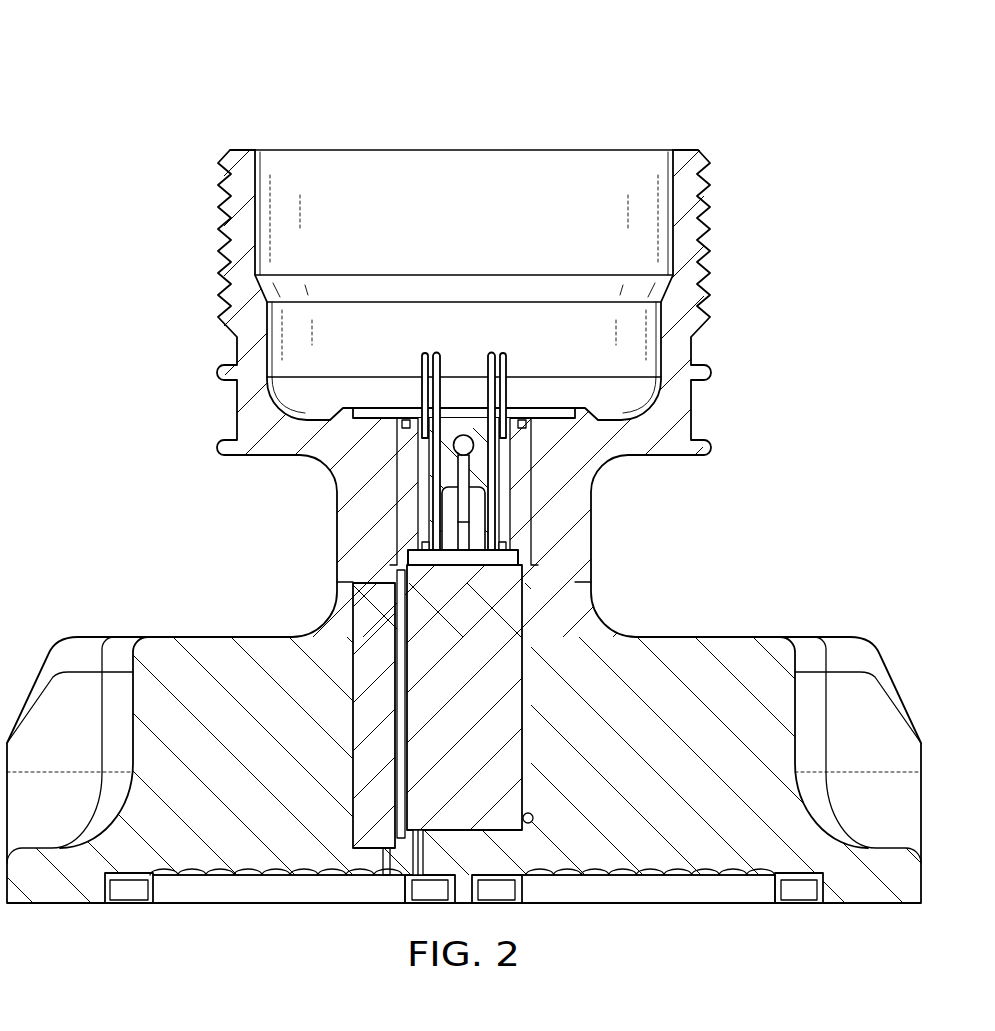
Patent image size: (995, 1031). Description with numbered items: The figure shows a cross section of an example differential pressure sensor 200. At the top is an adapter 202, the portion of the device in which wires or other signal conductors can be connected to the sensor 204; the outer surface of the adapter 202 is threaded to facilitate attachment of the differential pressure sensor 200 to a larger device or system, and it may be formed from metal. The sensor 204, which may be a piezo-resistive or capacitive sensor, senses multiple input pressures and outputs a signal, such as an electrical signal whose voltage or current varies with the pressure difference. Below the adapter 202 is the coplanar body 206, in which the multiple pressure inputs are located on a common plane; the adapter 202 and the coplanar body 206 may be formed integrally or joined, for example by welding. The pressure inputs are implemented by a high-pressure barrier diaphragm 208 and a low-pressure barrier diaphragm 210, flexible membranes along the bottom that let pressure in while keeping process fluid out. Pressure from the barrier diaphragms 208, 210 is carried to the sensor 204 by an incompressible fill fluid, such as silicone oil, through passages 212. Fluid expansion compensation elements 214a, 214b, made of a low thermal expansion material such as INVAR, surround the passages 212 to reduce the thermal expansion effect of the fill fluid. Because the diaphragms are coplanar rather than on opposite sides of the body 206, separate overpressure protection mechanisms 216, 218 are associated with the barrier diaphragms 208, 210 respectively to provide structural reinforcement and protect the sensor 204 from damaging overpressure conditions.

The differential pressure sensor 200 is at (598, 80).
The adapter 202 is at (162, 211).
The sensor 204 is at (452, 513).
The coplanar body 206 is at (216, 604).
The high-pressure barrier diaphragm 208 is at (277, 895).
The low-pressure barrier diaphragm 210 is at (648, 895).
The passage 212 is at (424, 846).
The fluid expansion compensation element 214a is at (353, 717).
The fluid expansion compensation element 214b is at (514, 704).
The overpressure protection mechanism 216 is at (204, 855).
The overpressure protection mechanism 218 is at (711, 855).